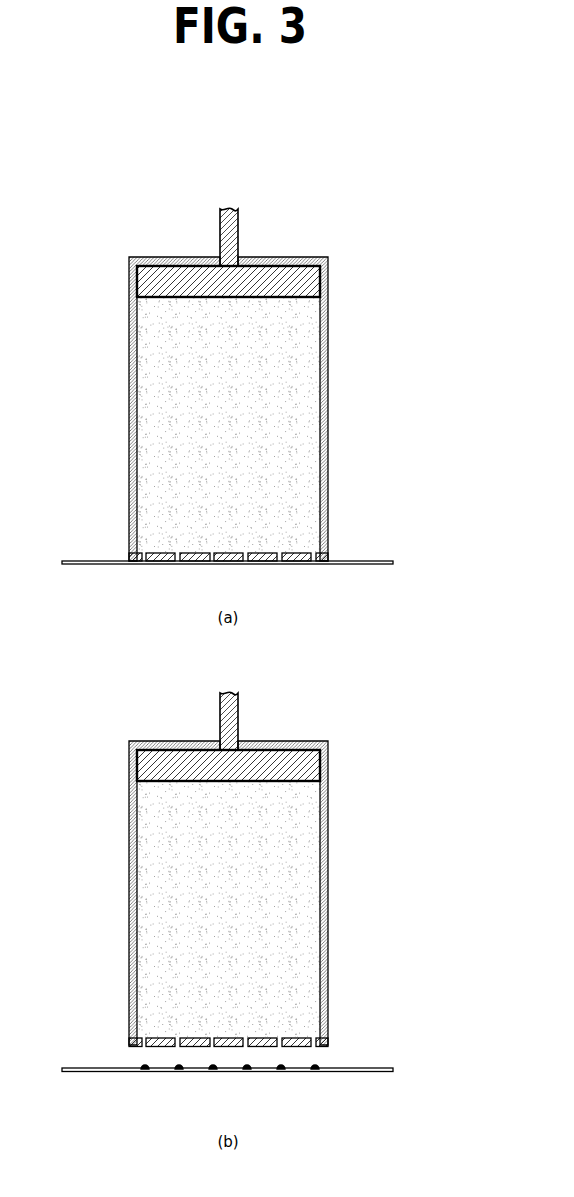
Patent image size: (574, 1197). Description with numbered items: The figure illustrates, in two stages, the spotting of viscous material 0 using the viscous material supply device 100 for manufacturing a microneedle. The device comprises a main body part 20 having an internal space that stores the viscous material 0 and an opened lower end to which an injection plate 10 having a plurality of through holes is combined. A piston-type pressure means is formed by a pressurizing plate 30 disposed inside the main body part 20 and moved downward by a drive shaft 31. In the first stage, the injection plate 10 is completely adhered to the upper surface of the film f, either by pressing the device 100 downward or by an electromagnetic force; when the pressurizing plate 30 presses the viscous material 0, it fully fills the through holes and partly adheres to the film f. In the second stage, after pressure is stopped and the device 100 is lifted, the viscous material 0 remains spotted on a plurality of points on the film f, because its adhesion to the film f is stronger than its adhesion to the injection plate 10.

The viscous material supply device 100 is at (121, 237).
The main body part 20 is at (133, 384).
The pressurizing plate 30 is at (308, 282).
The drive shaft 31 is at (232, 233).
The injection plate 10 is at (160, 556).
The viscous material 0 is at (307, 418).
The film f is at (393, 562).